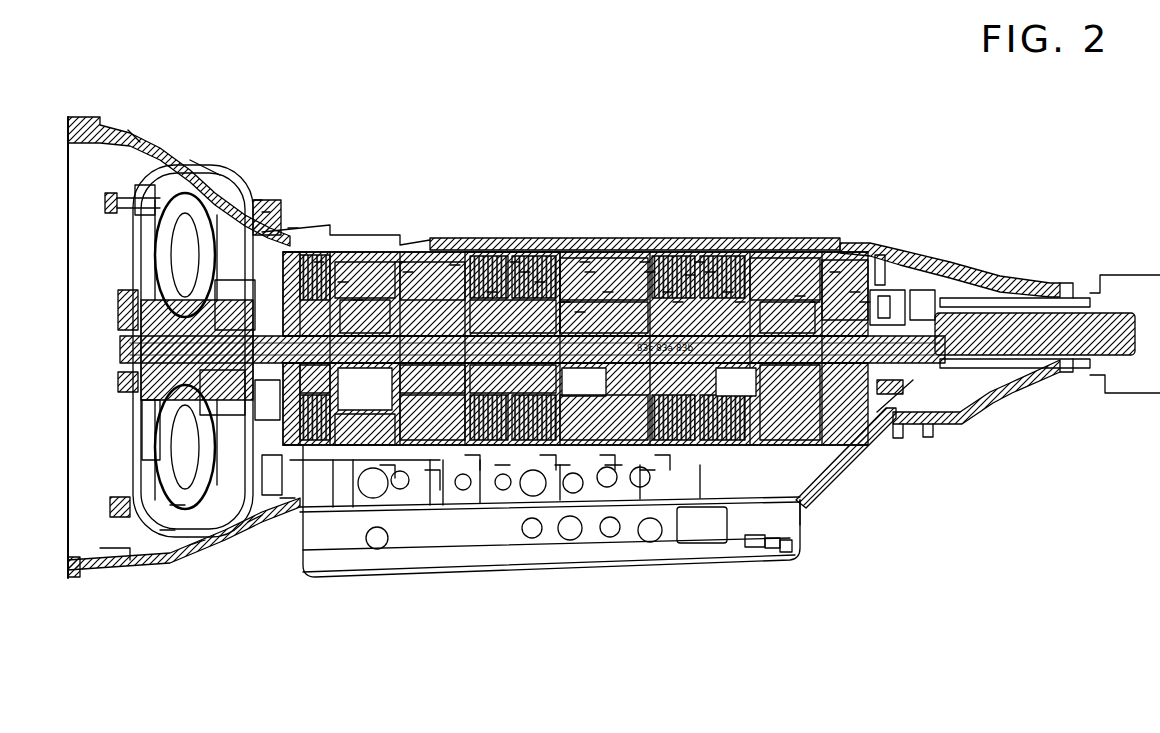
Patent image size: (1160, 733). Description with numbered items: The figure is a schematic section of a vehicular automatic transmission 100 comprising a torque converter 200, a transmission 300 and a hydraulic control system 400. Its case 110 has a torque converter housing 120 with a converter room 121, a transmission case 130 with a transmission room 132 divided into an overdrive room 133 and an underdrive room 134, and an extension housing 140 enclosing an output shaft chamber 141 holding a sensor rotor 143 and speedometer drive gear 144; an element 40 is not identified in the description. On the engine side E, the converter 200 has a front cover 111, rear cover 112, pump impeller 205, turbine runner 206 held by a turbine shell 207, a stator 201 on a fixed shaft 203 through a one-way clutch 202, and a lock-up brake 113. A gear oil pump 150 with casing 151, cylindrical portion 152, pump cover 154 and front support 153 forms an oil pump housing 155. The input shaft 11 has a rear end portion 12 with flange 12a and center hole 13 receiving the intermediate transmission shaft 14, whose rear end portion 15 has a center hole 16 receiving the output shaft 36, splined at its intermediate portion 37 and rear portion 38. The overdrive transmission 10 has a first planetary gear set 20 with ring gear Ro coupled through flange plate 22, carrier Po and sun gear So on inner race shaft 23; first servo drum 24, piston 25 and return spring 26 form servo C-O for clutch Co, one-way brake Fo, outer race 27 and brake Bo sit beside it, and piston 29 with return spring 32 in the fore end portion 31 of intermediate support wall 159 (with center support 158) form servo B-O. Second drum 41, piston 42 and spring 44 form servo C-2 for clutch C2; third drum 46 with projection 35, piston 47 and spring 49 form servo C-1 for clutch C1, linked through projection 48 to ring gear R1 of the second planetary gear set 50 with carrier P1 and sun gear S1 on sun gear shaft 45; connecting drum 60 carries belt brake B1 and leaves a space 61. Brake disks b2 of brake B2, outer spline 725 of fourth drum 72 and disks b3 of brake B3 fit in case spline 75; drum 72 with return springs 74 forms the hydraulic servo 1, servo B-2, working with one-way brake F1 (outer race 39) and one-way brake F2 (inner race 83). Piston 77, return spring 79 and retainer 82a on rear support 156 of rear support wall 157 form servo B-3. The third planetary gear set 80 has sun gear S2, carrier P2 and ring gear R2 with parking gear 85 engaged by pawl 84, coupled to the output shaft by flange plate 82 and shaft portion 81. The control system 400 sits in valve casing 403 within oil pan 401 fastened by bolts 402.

The vehicular automatic transmission 100 is at (148, 138).
The fluid coupling 200 is at (218, 168).
The gear type oil pump 150 is at (258, 205).
The oil pump cover 154 is at (266, 212).
The cylindrical front support 153 is at (293, 228).
The hydraulic servo for clutch C0 C-O is at (312, 250).
The inner race shaft 23 is at (300, 252).
The first hydraulic servo drum 24 is at (318, 262).
The transmission 300 is at (332, 270).
The overdrive planetary gear transmission 10 is at (343, 282).
The annular piston 25 is at (358, 300).
The multiple disk brake B0 Bo is at (400, 262).
The outer race 27 is at (408, 272).
The planetary carrier P0 Po is at (416, 286).
The ring gear R0 Ro is at (422, 300).
The flange plate 22 is at (432, 302).
The piston 29 is at (455, 265).
The hydraulic servo for brake B0 B-O is at (468, 275).
The hydraulic servo for clutch C2 C-2 is at (480, 290).
The second hydraulic servo drum 41 is at (492, 292).
The annular piston 42 is at (505, 302).
The multiple disk clutch C2 is at (515, 262).
The return spring 44 is at (525, 272).
The belt brake B1 is at (540, 282).
The hydraulic servo for clutch C1 C-1 is at (548, 292).
The third hydraulic servo drum 46 is at (565, 302).
The annular piston 47 is at (580, 312).
The multiple disk clutch C1 is at (585, 262).
The return spring 49 is at (590, 272).
The planetary carrier P1 is at (600, 282).
The ring gear R1 is at (608, 292).
The sun gear S1 is at (615, 305).
The connecting drum 60 is at (645, 262).
The extra space 61 is at (650, 272).
The multiple disk brake B2 is at (660, 282).
The spline 75 is at (668, 292).
The brake disks of brake B2 b2 is at (678, 302).
The outer race 39 is at (690, 275).
The sun gear shaft 45 is at (700, 262).
The hydraulic servo for brake B2 B-2 is at (710, 272).
The multiple disk brake B3 is at (720, 282).
The brake disks of brake B3 b3 is at (728, 292).
The fourth hydraulic servo drum 72 is at (740, 302).
The inner race 83 is at (755, 262).
The carrier P2 is at (770, 272).
The sun gear S2 is at (785, 286).
The ring gear R2 is at (800, 296).
The flange plate 82 is at (815, 302).
The transmission case 130 is at (885, 250).
The rearwardly projecting shaft portion 81 is at (835, 272).
The hydraulic servo for brake B3 B-3 is at (845, 282).
The piston 77 is at (855, 292).
The rear support wall 157 is at (865, 302).
The retainer 82a is at (875, 290).
The cylindrical rear support 156 is at (922, 300).
The sensor rotor 143 is at (945, 330).
The extension housing 140 is at (1000, 312).
The speedometer drive gear 144 is at (1005, 320).
The oil pump casing 151 is at (160, 236).
The cylindrical portion 152 is at (165, 255).
The input shaft 11 is at (152, 272).
The fixed shaft 203 is at (140, 305).
The return spring 26 is at (235, 305).
The one-way clutch 202 is at (138, 392).
The stator 201 is at (152, 420).
The oil pump housing 155 is at (165, 448).
The front cover 111 is at (125, 497).
The engine side E is at (222, 392).
The rear end portion 12 is at (267, 414).
The center hole 13 is at (276, 475).
The first planetary gear set 20 is at (365, 389).
The intermediate transmission shaft 14 is at (365, 435).
The second planetary gear set 50 is at (584, 382).
The third planetary gear set 80 is at (736, 382).
The torque converter room 121 is at (95, 583).
The direct coupling brake 113 is at (125, 555).
The case 110 is at (165, 580).
The turbine shell 207 is at (176, 505).
The turbine runner 206 is at (168, 530).
The torque converter housing 120 is at (222, 512).
The rear cover 112 is at (197, 547).
The pump impeller 205 is at (255, 525).
The overdrive room 133 is at (287, 503).
The one-way brake F0 Fo is at (305, 475).
The multiple disk clutch C0 Co is at (312, 462).
The sun gear S0 So is at (326, 452).
The transmission room 132 is at (356, 462).
The flange portion 12a is at (371, 452).
The return spring 32 is at (386, 472).
The fore end portion 31 is at (411, 462).
The intermediate support wall 159 is at (421, 452).
The hydraulic control system 400 is at (431, 482).
The cylindrical center support 158 is at (471, 452).
The annular projection 35 is at (491, 457).
The rear end portion 15 is at (501, 472).
The annular projection 48 is at (541, 452).
The output shaft 36 is at (549, 457).
The center hole 16 is at (561, 472).
The one-way brake F1 is at (600, 442).
The underdrive room 134 is at (606, 452).
The return springs 74 is at (613, 472).
The one-way brake F2 is at (651, 442).
The valve casing 403 is at (661, 452).
The hydraulic servo 1 is at (647, 668).
The outer spline 725 is at (690, 502).
The oil pan 401 is at (716, 522).
The parking pawl 84 is at (736, 542).
The parking gear 85 is at (762, 547).
The oil pan 40 is at (790, 502).
The return spring 79 is at (812, 500).
The intermediate portion 37 is at (820, 495).
The bolts 402 is at (852, 540).
The output shaft chamber 141 is at (893, 440).
The rear portion 38 is at (1012, 372).